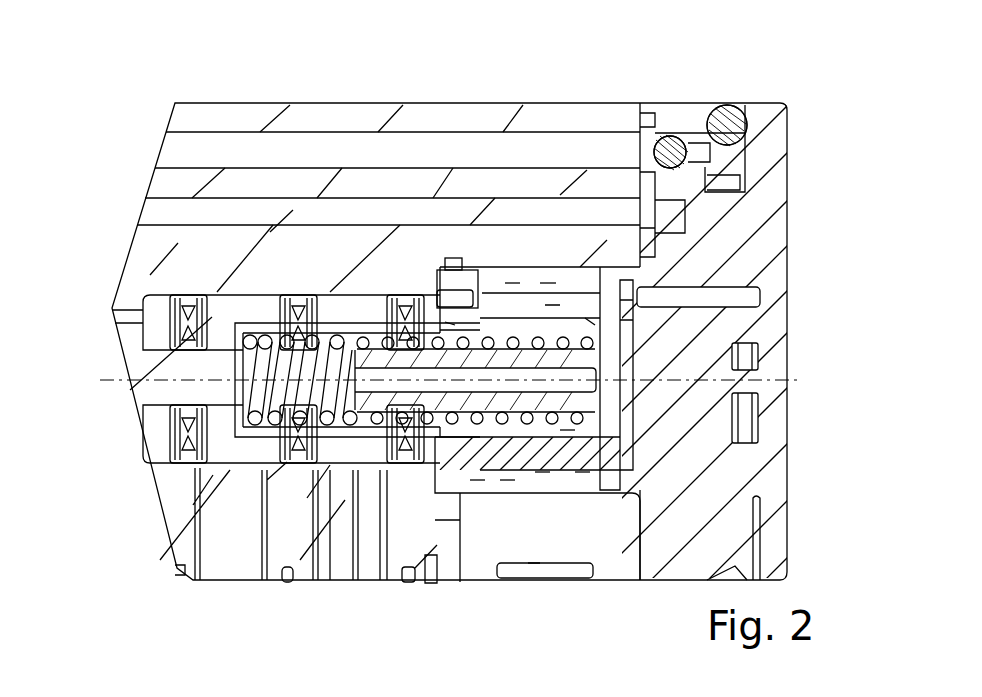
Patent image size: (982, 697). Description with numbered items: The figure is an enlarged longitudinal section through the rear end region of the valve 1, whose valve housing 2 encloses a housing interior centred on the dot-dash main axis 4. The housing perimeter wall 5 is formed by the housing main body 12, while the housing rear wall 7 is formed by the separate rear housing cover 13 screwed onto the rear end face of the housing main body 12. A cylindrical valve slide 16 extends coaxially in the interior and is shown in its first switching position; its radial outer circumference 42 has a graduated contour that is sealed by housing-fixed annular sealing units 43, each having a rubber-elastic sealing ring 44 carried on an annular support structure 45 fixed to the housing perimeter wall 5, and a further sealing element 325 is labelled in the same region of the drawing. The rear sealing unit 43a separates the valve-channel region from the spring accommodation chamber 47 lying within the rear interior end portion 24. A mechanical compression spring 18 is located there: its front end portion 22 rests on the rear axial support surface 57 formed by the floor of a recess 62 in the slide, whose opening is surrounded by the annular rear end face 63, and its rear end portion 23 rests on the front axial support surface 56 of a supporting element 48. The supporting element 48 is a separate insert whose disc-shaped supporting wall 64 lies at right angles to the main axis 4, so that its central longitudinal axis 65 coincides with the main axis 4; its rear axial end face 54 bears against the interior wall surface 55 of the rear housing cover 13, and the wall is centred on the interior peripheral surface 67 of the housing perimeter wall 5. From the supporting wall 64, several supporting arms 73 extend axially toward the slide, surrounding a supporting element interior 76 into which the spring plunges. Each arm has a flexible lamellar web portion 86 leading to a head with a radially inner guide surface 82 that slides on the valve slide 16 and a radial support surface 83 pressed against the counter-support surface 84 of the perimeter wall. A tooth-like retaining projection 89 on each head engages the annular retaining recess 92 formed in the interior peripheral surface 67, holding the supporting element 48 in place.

The valve 1 is at (808, 112).
The valve housing 2 is at (427, 82).
The main axis 4 is at (262, 412).
The central longitudinal axis 65 is at (122, 383).
The housing perimeter wall 5 is at (397, 197).
The housing main body 12 is at (172, 255).
The housing rear wall 7 is at (759, 445).
The rear housing cover 13 is at (740, 324).
The valve slide 16 is at (278, 295).
The recess 62 is at (330, 295).
The sealing ring 325 is at (407, 295).
The guide surface 82 is at (433, 268).
The retaining projection 89 is at (449, 258).
The retaining recess 92 is at (513, 278).
The annular rear end face 63 is at (548, 283).
The supporting arms 73 is at (556, 305).
The rear interior end portion 24 is at (582, 318).
The supporting element interior 76 is at (655, 140).
The front axial support surface 56 is at (680, 138).
The rear axial support surface 57 is at (240, 392).
The supporting wall 64 is at (700, 292).
The axial end face 54 is at (634, 368).
The interior wall surface 55 is at (616, 400).
The rear end portion 23 is at (600, 417).
The front end portion 22 is at (240, 440).
The sealing ring 44 is at (300, 465).
The annular support structure 45 is at (318, 470).
The compression spring 18 is at (357, 470).
The annular sealing units 43 is at (380, 570).
The rear sealing unit 43a is at (400, 455).
The radial outer circumference 42 is at (433, 455).
The counter-support surface 84 is at (505, 485).
The radial support surface 83 is at (478, 485).
The interior peripheral surface 67 is at (540, 478).
The spring accommodation chamber 47 is at (580, 478).
The supporting element 48 is at (568, 432).
The web portion 86 is at (556, 488).